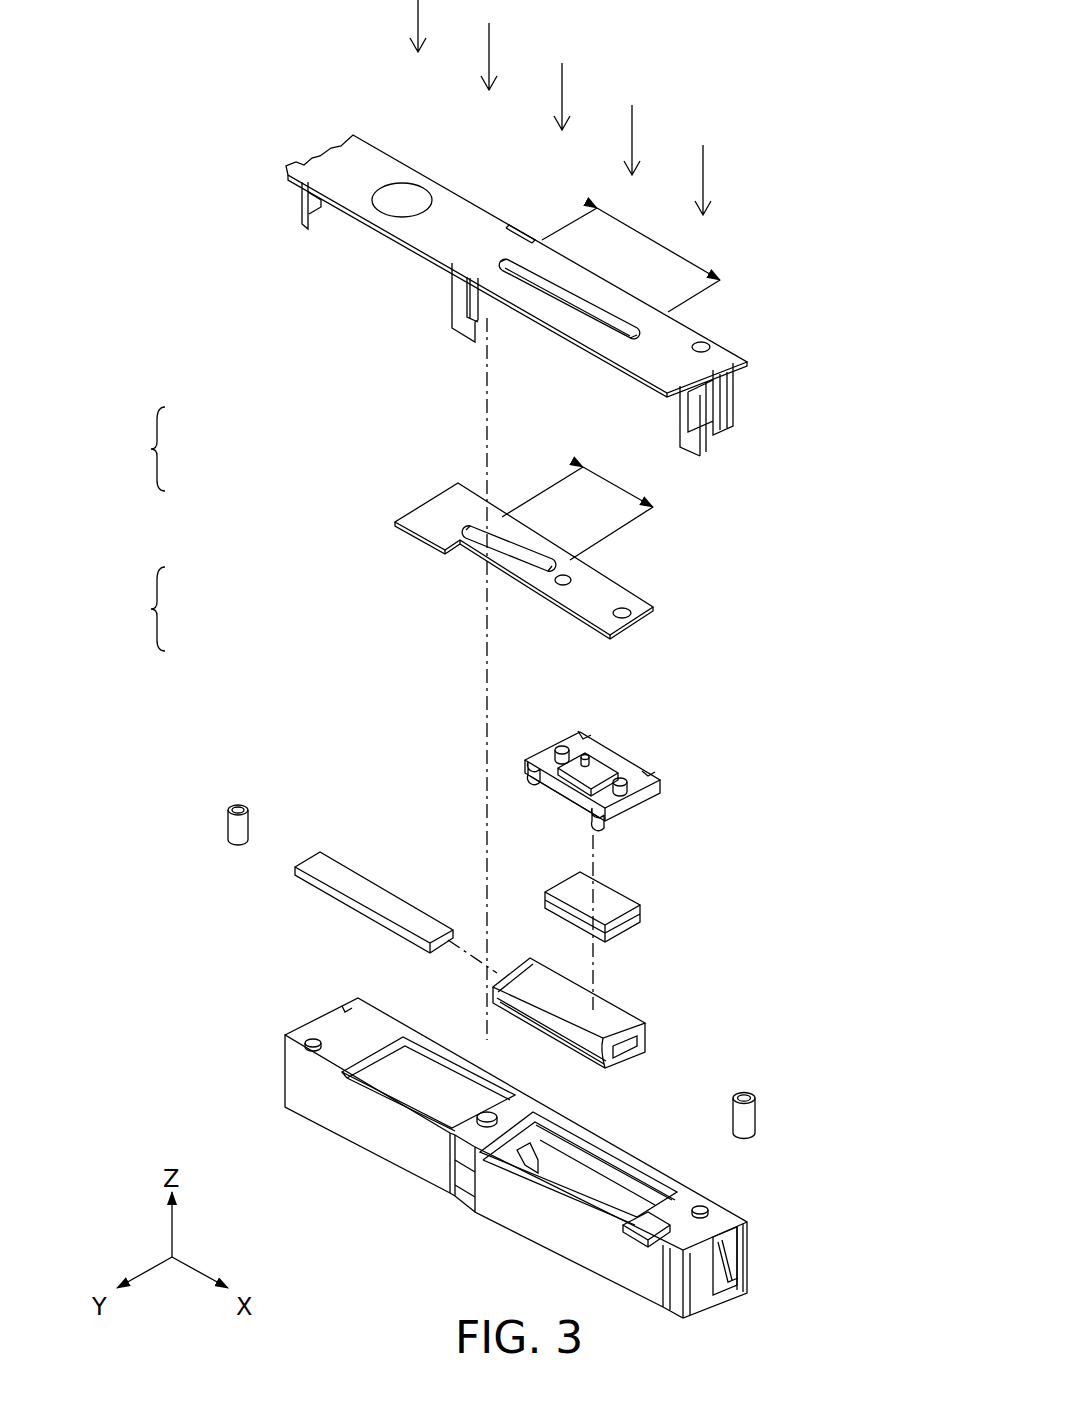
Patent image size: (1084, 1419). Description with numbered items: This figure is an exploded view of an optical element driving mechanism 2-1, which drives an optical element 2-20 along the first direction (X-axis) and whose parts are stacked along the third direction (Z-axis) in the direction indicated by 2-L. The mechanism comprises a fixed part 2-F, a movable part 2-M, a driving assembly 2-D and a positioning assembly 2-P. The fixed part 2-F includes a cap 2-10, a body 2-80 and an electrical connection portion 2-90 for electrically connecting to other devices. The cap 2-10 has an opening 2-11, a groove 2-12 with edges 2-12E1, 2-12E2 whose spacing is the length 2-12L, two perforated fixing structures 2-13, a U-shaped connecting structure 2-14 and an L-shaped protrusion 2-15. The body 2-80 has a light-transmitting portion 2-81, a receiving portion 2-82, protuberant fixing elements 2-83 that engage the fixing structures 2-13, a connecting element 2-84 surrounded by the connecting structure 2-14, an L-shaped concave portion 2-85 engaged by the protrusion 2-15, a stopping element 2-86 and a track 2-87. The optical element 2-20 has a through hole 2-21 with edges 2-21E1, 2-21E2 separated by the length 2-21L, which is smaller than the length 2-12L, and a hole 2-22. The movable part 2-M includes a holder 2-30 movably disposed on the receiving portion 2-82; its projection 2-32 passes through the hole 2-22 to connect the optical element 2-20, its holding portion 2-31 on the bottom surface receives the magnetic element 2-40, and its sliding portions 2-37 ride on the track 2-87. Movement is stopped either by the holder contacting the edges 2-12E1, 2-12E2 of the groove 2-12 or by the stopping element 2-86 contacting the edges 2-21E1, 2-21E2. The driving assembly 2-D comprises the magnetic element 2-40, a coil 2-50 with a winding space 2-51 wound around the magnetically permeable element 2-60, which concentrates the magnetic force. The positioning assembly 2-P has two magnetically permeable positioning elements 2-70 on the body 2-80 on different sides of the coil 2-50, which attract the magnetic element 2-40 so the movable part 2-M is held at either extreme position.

The optical element driving mechanism 2-1 is at (142, 17).
The light / insertion direction 2-L is at (418, 8).
The fixed part 2-F is at (166, 450).
The driving assembly 2-D is at (164, 610).
The cap 2-10 is at (482, 216).
The opening 2-11 is at (414, 197).
The groove 2-12 is at (570, 300).
The length of the groove 2-12L is at (642, 260).
The edge of the groove 2-12E1 is at (634, 337).
The edge of the groove 2-12E2 is at (507, 263).
The fixing structure 2-13 is at (303, 196).
The connecting structure 2-14 is at (727, 398).
The protrusion 2-15 is at (453, 303).
The optical element 2-20 is at (620, 597).
The through hole 2-21 is at (503, 548).
The length of the through hole 2-21L is at (593, 510).
The edge of the through hole 2-21E1 is at (453, 525).
The edge of the through hole 2-21E2 is at (550, 568).
The hole 2-22 is at (567, 577).
The movable part 2-M is at (700, 703).
The holder 2-30 is at (600, 745).
The holding portion 2-31 is at (565, 798).
The projection 2-32 is at (625, 778).
The sliding portion 2-37 is at (530, 767).
The magnetic element 2-40 is at (620, 898).
The coil 2-50 is at (612, 1017).
The winding space 2-51 is at (635, 1045).
The magnetically permeable element 2-60 is at (373, 890).
The positioning element 2-70 is at (234, 801).
The positioning assembly 2-P is at (864, 1112).
The body 2-80 is at (340, 987).
The light-transmitting portion 2-81 is at (437, 1077).
The receiving portion 2-82 is at (560, 1177).
The fixing element 2-83 is at (313, 1042).
The connecting element 2-84 is at (713, 1260).
The concave portion 2-85 is at (458, 1190).
The stopping element 2-86 is at (490, 1113).
The track 2-87 is at (630, 1190).
The electrical connection portion 2-90 is at (653, 1227).